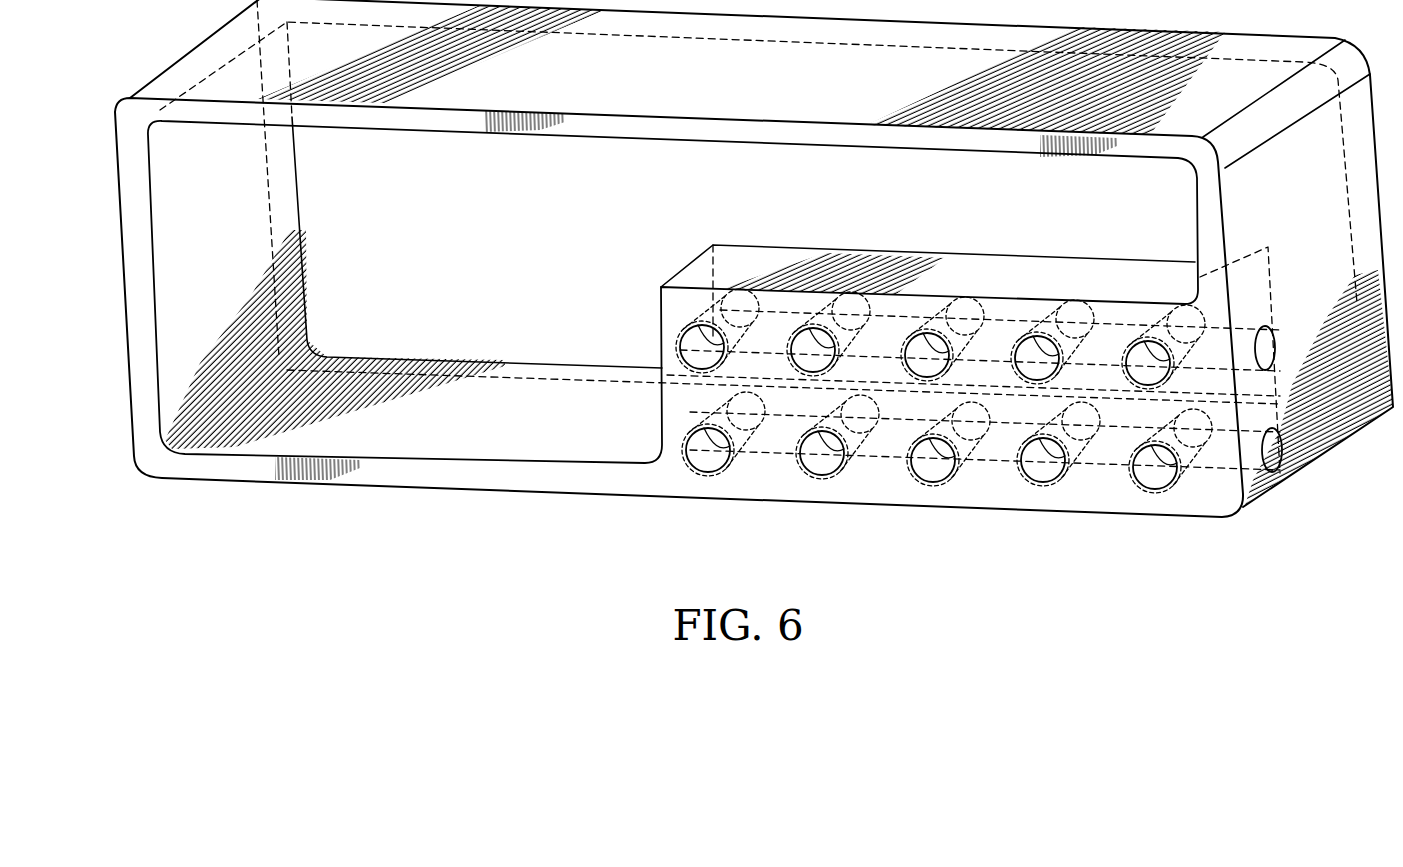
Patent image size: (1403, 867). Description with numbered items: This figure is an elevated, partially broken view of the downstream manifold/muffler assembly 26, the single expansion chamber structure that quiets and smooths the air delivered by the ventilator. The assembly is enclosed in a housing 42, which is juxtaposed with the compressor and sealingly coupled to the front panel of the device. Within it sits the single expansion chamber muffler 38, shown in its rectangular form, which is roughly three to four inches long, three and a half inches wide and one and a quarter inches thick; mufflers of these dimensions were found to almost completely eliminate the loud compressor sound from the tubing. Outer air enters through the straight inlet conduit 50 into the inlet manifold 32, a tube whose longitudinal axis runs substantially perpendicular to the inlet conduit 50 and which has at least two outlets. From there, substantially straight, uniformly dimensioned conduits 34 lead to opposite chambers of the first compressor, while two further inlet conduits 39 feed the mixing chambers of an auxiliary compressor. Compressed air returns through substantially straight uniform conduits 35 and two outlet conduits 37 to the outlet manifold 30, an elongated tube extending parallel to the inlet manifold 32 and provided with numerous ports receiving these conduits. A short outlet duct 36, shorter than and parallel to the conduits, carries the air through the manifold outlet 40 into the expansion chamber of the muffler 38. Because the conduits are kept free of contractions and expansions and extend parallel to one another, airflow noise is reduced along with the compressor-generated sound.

The downstream manifold/muffler assembly 26 is at (363, 511).
The outlet manifold 30 is at (1265, 348).
The inlet manifold 32 is at (1272, 450).
The conduits 34 is at (822, 463).
The conduits 35 is at (833, 305).
The outlet duct 36 is at (960, 330).
The outlet conduits 37 is at (690, 347).
The single expansion chamber muffler 38 is at (531, 267).
The inlet conduits 39 is at (707, 460).
The manifold outlet 40 is at (1013, 305).
The housing 42 is at (278, 440).
The inlet conduit 50 is at (935, 465).